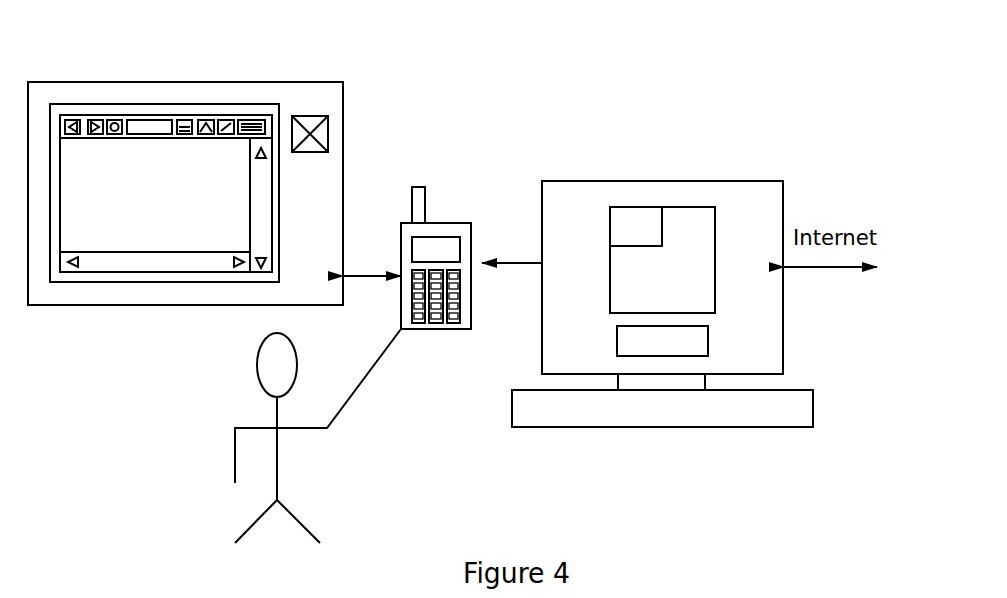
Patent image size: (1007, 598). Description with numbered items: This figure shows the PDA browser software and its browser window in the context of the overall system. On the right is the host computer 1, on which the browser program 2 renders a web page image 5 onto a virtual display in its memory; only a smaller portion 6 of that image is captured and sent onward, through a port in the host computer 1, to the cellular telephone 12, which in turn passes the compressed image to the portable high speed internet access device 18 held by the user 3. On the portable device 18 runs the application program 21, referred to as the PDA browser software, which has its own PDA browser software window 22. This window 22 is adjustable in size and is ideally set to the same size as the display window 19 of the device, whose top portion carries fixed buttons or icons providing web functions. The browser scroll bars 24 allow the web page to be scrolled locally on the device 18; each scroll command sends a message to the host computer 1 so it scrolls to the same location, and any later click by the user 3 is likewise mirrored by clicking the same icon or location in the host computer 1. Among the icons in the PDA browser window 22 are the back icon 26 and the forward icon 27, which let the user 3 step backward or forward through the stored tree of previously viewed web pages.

The host computer 1 is at (662, 335).
The browser program 2 is at (623, 396).
The user 3 is at (318, 436).
The web page image 5 is at (712, 204).
The portion of the web page 6 is at (671, 171).
The cellular telephone 12 is at (476, 225).
The portable high speed internet access device 18 is at (185, 227).
The display window 19 is at (221, 193).
The application program 21 is at (356, 119).
The PDA browser software window 22 is at (154, 225).
The browser scroll bars 24 is at (279, 278).
The back icon 26 is at (107, 67).
The forward icon 27 is at (135, 82).